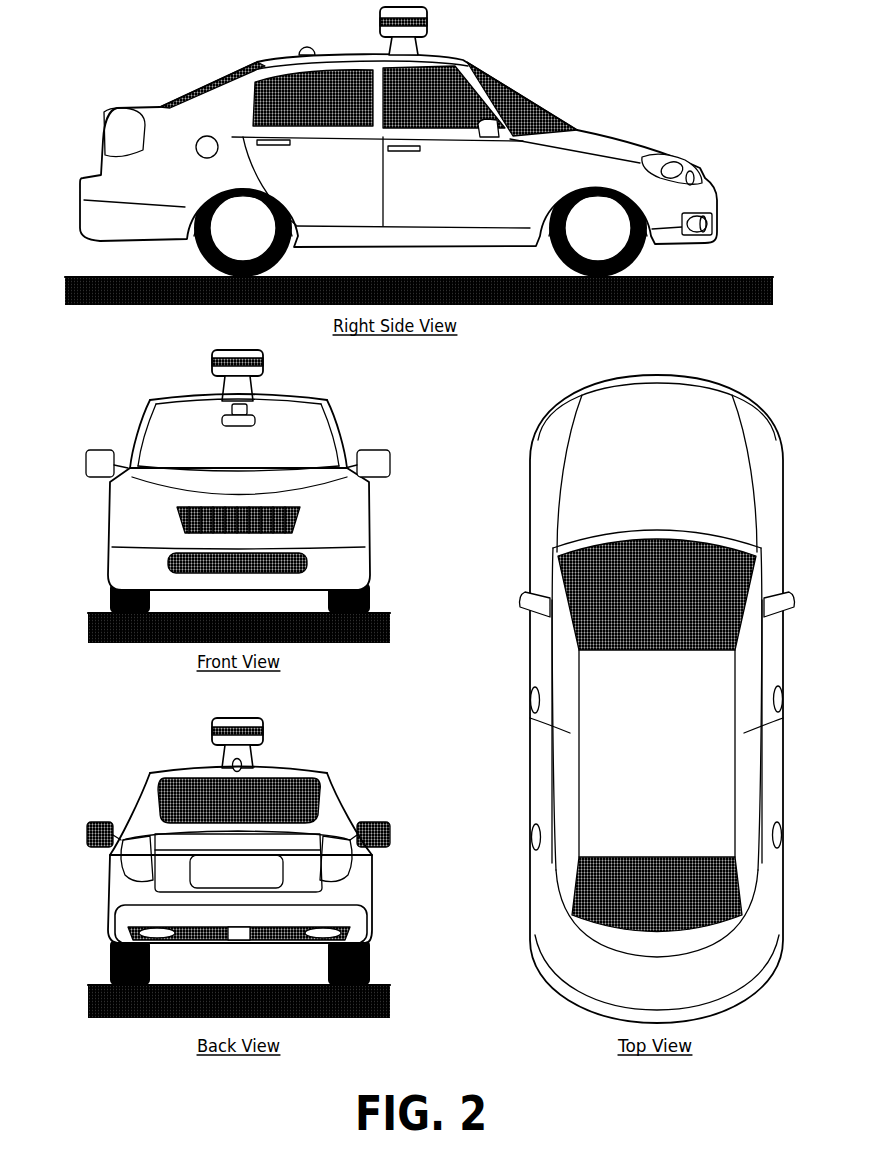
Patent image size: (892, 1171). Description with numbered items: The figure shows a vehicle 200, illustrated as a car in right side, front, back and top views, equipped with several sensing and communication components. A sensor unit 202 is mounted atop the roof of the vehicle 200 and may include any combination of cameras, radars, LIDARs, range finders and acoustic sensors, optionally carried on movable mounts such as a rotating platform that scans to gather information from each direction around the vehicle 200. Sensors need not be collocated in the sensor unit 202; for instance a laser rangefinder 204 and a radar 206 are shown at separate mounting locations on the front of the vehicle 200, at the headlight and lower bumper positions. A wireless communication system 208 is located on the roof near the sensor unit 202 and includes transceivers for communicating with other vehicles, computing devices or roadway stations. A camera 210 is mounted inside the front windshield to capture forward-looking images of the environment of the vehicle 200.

The vehicle 200 is at (75, 97).
The sensor unit 202 is at (427, 33).
The laser rangefinder 204 is at (700, 175).
The radar 206 is at (714, 222).
The wireless communication system 208 is at (302, 50).
The camera 210 is at (248, 410).